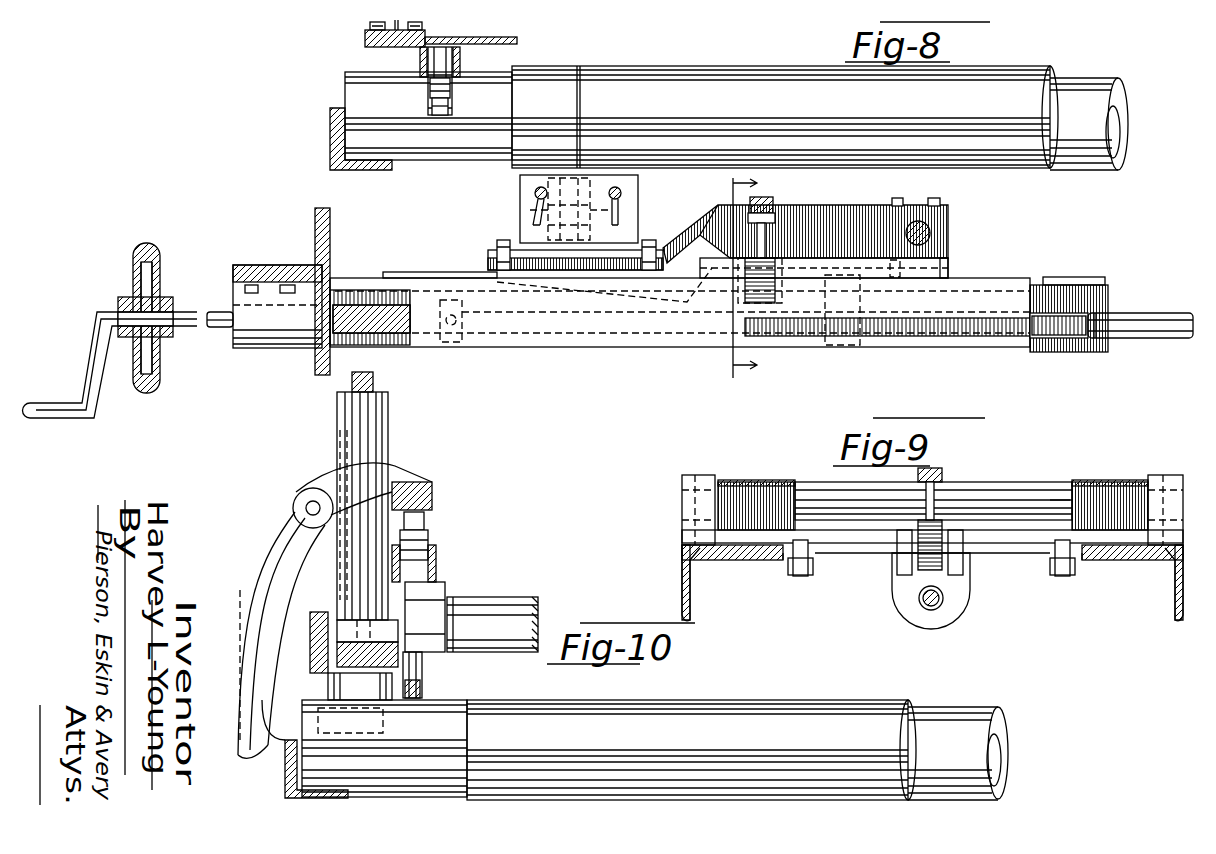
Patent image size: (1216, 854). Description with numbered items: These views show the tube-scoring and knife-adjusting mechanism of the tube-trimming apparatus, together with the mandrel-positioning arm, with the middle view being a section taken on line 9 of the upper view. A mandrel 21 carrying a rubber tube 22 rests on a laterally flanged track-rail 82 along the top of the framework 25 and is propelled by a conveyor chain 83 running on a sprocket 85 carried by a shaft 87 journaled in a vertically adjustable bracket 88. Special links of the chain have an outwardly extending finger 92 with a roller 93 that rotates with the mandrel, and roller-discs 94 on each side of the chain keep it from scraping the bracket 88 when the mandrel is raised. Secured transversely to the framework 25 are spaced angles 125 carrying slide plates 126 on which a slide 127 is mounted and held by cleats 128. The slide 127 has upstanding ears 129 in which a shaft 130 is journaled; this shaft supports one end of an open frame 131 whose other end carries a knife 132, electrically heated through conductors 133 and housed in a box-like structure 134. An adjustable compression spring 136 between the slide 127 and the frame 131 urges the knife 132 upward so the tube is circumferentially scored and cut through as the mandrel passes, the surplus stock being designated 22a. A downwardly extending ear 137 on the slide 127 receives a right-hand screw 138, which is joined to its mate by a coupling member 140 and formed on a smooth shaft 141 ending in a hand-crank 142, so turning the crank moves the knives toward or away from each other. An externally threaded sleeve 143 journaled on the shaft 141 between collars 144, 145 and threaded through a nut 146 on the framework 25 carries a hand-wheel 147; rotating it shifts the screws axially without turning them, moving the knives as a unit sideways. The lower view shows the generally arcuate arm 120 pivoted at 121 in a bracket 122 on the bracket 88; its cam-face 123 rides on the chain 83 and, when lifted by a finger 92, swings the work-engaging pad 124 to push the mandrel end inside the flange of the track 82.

In FIG. 8, the section line 9— 9 is at (727, 277).
In FIG. 8, the mandrel 21 is at (1100, 82).
In FIG. 10, the mandrel 21 is at (950, 708).
In FIG. 8, the tube 22 is at (1058, 78).
In FIG. 10, the tube 22 is at (912, 706).
In FIG. 8, the surplus tube-stock 22a is at (522, 133).
In FIG. 10, the surplus tube-stock 22a is at (384, 748).
In FIG. 8, the framework 25 is at (320, 372).
In FIG. 8, the track-rail 82 is at (340, 172).
In FIG. 10, the track-rail 82 is at (285, 787).
In FIG. 8, the conveyor chain 83 is at (442, 56).
In FIG. 10, the conveyor chain 83 is at (422, 690).
In FIG. 10, the sprocket 85 is at (435, 592).
In FIG. 10, the shaft 87 is at (500, 598).
In FIG. 8, the bracket 88 is at (505, 40).
In FIG. 10, the bracket 88 is at (310, 650).
In FIG. 8, the finger 92 is at (430, 90).
In FIG. 10, the finger 92 is at (428, 545).
In FIG. 8, the roller 93 is at (436, 102).
In FIG. 10, the roller 93 is at (425, 525).
In FIG. 8, the roller-disc 94 is at (420, 55).
In FIG. 10, the roller-disc 94 is at (436, 555).
In FIG. 10, the arcuate arm 120 is at (278, 545).
In FIG. 10, the pivot 121 is at (310, 505).
In FIG. 10, the bracket 122 is at (353, 563).
In FIG. 10, the cam-face 123 is at (432, 488).
In FIG. 10, the work-engaging pad 124 is at (295, 725).
In FIG. 8, the angle 125 is at (976, 348).
In FIG. 9, the angle 125 is at (682, 585).
In FIG. 8, the slide plate 126 is at (1065, 278).
In FIG. 9, the slide plate 126 is at (752, 560).
In FIG. 8, the slide 127 is at (922, 272).
In FIG. 9, the slide 127 is at (853, 553).
In FIG. 8, the cleat 128 is at (945, 288).
In FIG. 9, the cleat 128 is at (800, 577).
In FIG. 8, the upstanding ear 129 is at (948, 262).
In FIG. 9, the upstanding ear 129 is at (682, 537).
In FIG. 8, the shaft 130 is at (933, 228).
In FIG. 9, the shaft 130 is at (1030, 505).
In FIG. 8, the open frame 131 is at (856, 212).
In FIG. 9, the open frame 131 is at (807, 482).
In FIG. 8, the knife 132 is at (585, 165).
In FIG. 8, the electrical conductor 133 is at (612, 193).
In FIG. 8, the box-like structure 134 is at (520, 232).
In FIG. 8, the compression spring 136 is at (776, 258).
In FIG. 9, the compression spring 136 is at (945, 530).
In FIG. 8, the downwardly extending ear 137 is at (820, 343).
In FIG. 9, the downwardly extending ear 137 is at (950, 614).
In FIG. 8, the right-hand screw 138 is at (1080, 352).
In FIG. 9, the right-hand screw 138 is at (922, 606).
In FIG. 8, the coupling member 140 is at (1150, 316).
In FIG. 8, the smooth shaft 141 is at (220, 310).
In FIG. 8, the hand-crank 142 is at (88, 418).
In FIG. 8, the threaded sleeve 143 is at (385, 345).
In FIG. 8, the collar 144 is at (122, 300).
In FIG. 8, the collar 145 is at (462, 340).
In FIG. 8, the nut 146 is at (280, 350).
In FIG. 8, the hand-wheel 147 is at (152, 247).